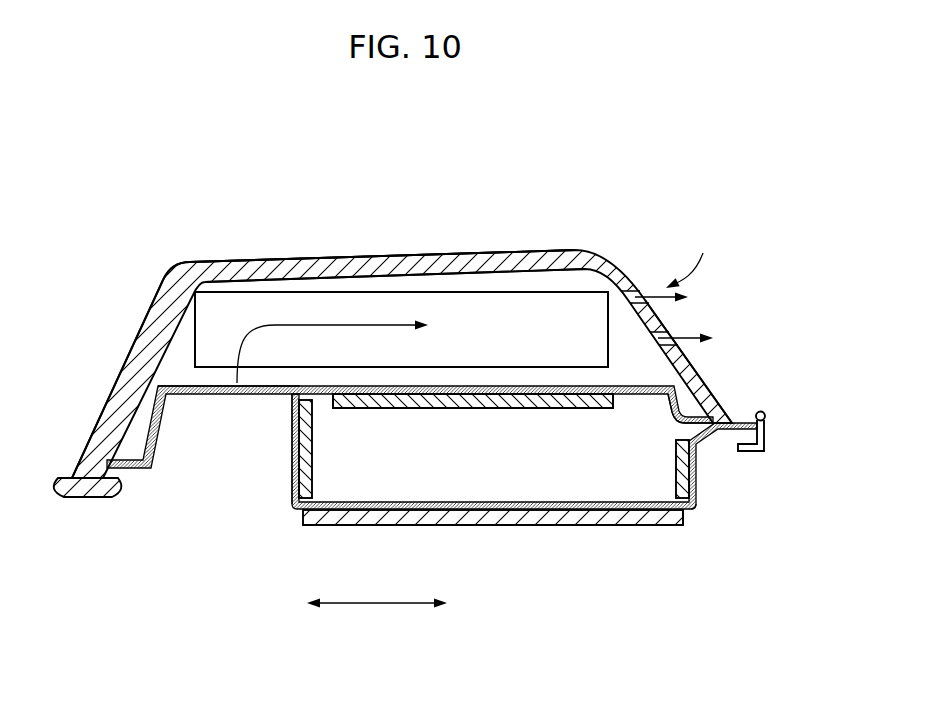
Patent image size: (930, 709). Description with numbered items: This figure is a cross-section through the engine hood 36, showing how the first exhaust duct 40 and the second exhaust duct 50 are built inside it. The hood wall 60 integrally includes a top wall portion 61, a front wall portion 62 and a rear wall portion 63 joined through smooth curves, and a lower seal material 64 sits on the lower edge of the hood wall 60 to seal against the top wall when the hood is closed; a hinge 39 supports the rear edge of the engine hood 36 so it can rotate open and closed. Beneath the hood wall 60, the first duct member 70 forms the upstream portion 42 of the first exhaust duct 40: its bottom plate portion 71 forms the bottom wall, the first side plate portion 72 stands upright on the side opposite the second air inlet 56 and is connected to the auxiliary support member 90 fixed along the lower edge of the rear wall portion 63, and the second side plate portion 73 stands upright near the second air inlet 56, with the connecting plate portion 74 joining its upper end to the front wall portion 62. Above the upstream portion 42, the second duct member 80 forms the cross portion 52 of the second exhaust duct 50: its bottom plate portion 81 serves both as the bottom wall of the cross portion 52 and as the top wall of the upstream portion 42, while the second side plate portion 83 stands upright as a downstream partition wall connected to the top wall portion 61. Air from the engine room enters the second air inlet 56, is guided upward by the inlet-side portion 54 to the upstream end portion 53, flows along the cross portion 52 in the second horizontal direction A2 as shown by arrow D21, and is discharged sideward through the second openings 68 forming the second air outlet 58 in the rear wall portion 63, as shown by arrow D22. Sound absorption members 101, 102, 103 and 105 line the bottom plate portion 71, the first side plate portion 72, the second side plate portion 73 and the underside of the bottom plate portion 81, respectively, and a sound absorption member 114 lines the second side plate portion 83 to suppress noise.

The engine hood 36 is at (574, 215).
The hinge 39 is at (770, 440).
The first exhaust duct 40 is at (611, 533).
The upstream portion 42 is at (521, 490).
The second exhaust duct 50 is at (178, 333).
The cross portion 52 is at (483, 284).
The upstream end portion 53 is at (222, 387).
The inlet-side portion 54 is at (197, 465).
The second air inlet 56 is at (226, 512).
The second air outlet 58 is at (702, 266).
The hood wall 60 is at (186, 257).
The top wall portion 61 is at (265, 258).
The front wall portion 62 is at (122, 368).
The rear wall portion 63 is at (698, 372).
The lower seal material 64 is at (72, 498).
The second opening 68 is at (637, 286).
The first duct member 70 is at (704, 511).
The bottom plate portion 71 is at (655, 517).
The first side plate portion 72 is at (700, 470).
The second side plate portion 73 is at (292, 460).
The connecting plate portion 74 is at (200, 400).
The second duct member 80 is at (637, 402).
The bottom plate portion 81 is at (430, 398).
The second side plate portion 83 is at (420, 285).
The auxiliary support member 90 is at (683, 406).
The sound absorption member 101 is at (418, 521).
The sound absorption member 102 is at (676, 466).
The sound absorption member 103 is at (315, 447).
The sound absorption member 105 is at (507, 398).
The sound absorption member 114 is at (530, 307).
The arrow D21 is at (345, 323).
The arrow D22 is at (657, 297).
The arrow A2 is at (372, 605).